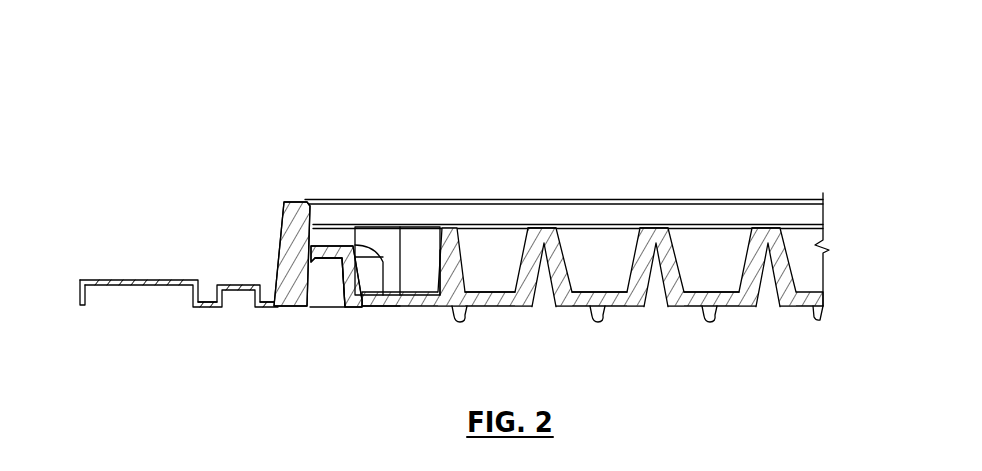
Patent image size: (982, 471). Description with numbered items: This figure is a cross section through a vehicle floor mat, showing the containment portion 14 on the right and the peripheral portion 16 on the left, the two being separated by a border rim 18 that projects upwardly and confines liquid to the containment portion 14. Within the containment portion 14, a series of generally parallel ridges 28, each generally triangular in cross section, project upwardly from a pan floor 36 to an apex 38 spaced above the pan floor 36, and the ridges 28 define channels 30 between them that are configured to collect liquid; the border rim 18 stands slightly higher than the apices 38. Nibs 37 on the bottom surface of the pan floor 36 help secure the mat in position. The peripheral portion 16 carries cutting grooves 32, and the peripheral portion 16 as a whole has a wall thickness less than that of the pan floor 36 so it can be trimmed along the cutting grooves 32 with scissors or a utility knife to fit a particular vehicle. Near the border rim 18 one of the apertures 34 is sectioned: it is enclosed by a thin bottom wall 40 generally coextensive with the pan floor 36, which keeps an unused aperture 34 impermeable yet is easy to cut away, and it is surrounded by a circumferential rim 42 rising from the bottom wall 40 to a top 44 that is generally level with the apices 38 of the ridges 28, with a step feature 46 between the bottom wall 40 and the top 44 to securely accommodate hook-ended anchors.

The containment portion 14 is at (418, 93).
The peripheral portion 16 is at (172, 203).
The border rim 18 is at (290, 202).
The ridges 28 is at (563, 246).
The channels 30 is at (479, 250).
The cutting grooves 32 is at (268, 295).
The apertures 34 is at (379, 228).
The pan floor 36 is at (490, 307).
The nibs 37 is at (464, 323).
The apex 38 is at (541, 228).
The bottom wall 40 is at (390, 308).
The circumferential rim 42 is at (438, 252).
The top 44 is at (313, 246).
The step feature 46 is at (343, 256).